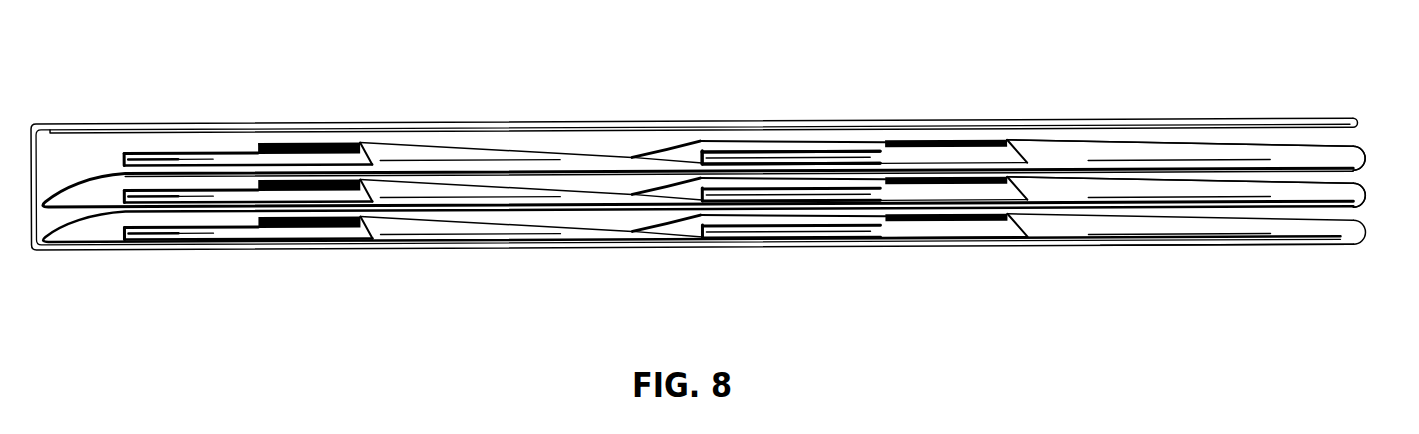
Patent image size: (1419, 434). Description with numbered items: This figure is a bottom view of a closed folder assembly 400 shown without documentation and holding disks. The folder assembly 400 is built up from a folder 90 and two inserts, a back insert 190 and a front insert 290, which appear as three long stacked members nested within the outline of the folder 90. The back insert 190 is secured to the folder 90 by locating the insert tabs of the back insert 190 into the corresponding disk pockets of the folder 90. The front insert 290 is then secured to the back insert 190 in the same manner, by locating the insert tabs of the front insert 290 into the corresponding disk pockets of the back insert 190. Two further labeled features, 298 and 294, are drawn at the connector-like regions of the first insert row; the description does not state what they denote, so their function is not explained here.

The folder assembly 400 is at (217, 53).
The first connector 298 is at (212, 160).
The second connector 294 is at (832, 153).
The front insert 290 is at (1365, 152).
The back insert 190 is at (1367, 198).
The folder 90 is at (1283, 240).